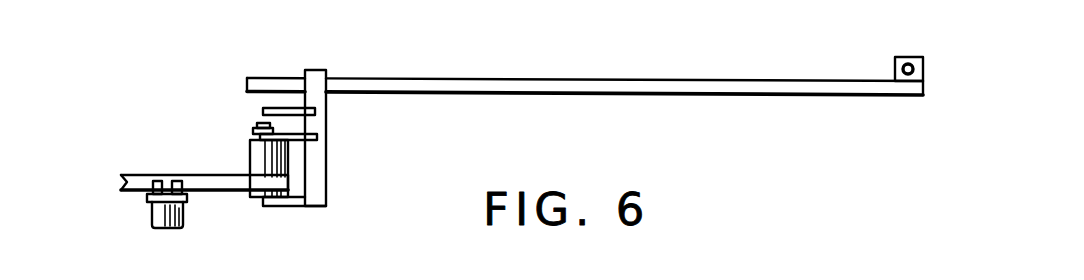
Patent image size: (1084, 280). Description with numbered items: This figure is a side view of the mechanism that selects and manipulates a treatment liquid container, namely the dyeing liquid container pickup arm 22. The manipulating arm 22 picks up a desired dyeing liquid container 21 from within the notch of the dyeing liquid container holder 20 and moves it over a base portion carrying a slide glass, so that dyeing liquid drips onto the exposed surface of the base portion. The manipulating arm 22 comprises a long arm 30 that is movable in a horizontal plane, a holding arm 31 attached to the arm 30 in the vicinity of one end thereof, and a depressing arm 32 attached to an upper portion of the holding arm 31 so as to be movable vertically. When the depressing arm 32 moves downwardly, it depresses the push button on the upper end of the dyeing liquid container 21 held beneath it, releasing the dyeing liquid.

The dyeing liquid container holder 20 is at (188, 175).
The dyeing liquid container 21 is at (255, 153).
The dyeing liquid container pickup arm 22 is at (708, 76).
The arm 30 is at (778, 98).
The holding arm 31 is at (318, 158).
The depressing arm 32 is at (272, 107).